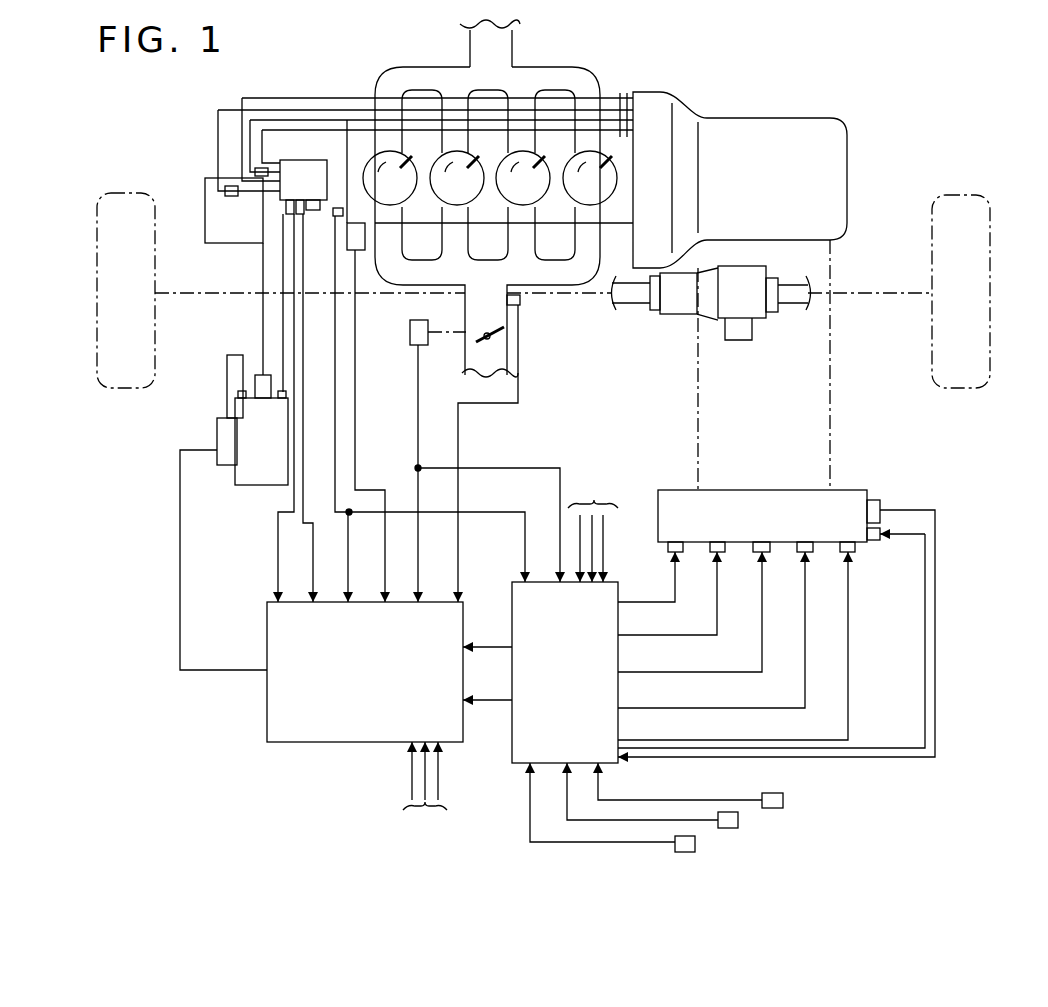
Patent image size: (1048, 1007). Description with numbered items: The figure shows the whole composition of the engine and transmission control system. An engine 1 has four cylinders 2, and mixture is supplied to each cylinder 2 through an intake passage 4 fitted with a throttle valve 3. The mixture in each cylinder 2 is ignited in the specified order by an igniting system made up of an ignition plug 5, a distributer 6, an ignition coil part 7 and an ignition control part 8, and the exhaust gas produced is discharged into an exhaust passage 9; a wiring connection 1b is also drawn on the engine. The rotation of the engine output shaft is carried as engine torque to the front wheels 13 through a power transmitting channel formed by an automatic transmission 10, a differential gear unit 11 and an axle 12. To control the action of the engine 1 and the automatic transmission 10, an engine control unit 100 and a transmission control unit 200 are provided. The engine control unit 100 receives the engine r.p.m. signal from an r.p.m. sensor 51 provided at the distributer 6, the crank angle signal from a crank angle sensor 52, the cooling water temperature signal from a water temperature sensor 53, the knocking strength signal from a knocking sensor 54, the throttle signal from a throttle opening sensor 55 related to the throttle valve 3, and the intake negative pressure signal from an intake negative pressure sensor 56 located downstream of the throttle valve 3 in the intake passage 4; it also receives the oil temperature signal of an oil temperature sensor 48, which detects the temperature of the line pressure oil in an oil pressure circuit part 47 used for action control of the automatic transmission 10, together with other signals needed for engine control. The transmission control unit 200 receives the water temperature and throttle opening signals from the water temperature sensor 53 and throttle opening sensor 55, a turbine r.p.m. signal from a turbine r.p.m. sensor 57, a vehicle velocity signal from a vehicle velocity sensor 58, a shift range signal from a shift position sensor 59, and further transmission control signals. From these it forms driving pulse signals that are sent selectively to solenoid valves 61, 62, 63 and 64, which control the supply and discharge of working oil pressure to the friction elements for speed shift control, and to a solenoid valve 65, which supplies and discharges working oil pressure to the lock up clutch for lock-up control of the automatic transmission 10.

The engine 1 is at (365, 90).
The wiring harness connector 1b is at (625, 120).
The cylinder 2 is at (406, 203).
The throttle valve 3 is at (472, 340).
The intake passage 4 is at (496, 299).
The ignition plug 5 is at (489, 177).
The distributer 6 is at (340, 242).
The ignition coil part 7 is at (256, 477).
The ignition control part 8 is at (220, 466).
The exhaust passage 9 is at (503, 62).
The automatic transmission 10 is at (800, 116).
The differential gear unit 11 is at (754, 313).
The axle 12 is at (632, 299).
The front wheels 13 is at (155, 335).
The oil pressure circuit part 47 is at (846, 490).
The oil temperature sensor 48 is at (877, 500).
The r.p.m. sensor 51 is at (283, 211).
The crank angle sensor 52 is at (295, 214).
The water temperature sensor 53 is at (314, 160).
The knocking sensor 54 is at (356, 224).
The throttle opening sensor 55 is at (410, 332).
The intake negative pressure sensor 56 is at (525, 302).
The turbine r.p.m. sensor 57 is at (698, 852).
The vehicle velocity sensor 58 is at (740, 828).
The shift position sensor 59 is at (784, 800).
The solenoid valve 61 is at (680, 553).
The solenoid valve 62 is at (725, 553).
The solenoid valve 63 is at (770, 553).
The solenoid valve 64 is at (813, 553).
The solenoid valve 65 is at (858, 553).
The engine control unit 100 is at (295, 742).
The transmission control unit 200 is at (512, 765).